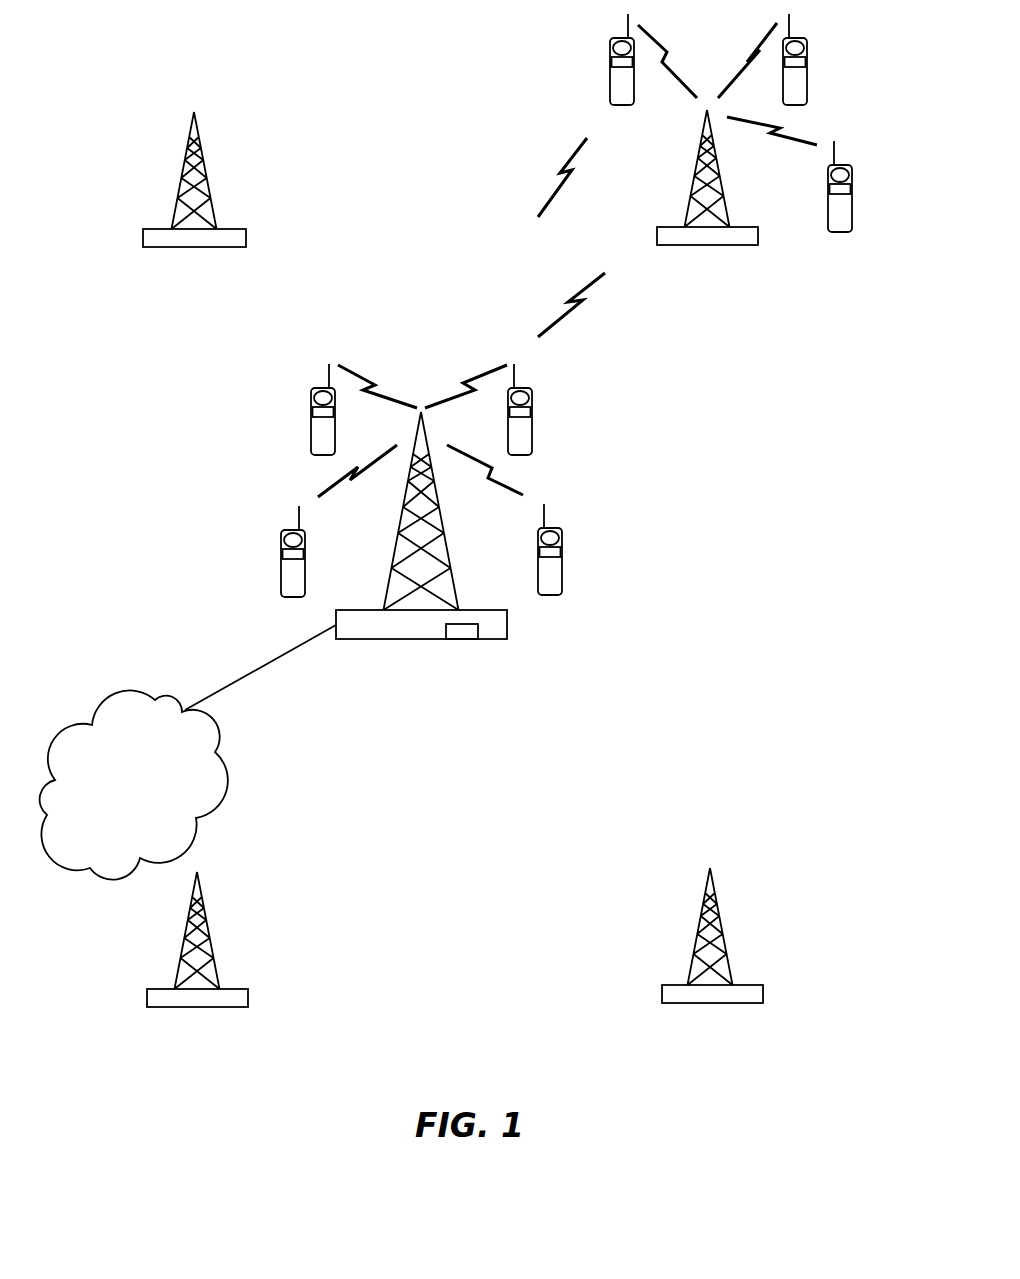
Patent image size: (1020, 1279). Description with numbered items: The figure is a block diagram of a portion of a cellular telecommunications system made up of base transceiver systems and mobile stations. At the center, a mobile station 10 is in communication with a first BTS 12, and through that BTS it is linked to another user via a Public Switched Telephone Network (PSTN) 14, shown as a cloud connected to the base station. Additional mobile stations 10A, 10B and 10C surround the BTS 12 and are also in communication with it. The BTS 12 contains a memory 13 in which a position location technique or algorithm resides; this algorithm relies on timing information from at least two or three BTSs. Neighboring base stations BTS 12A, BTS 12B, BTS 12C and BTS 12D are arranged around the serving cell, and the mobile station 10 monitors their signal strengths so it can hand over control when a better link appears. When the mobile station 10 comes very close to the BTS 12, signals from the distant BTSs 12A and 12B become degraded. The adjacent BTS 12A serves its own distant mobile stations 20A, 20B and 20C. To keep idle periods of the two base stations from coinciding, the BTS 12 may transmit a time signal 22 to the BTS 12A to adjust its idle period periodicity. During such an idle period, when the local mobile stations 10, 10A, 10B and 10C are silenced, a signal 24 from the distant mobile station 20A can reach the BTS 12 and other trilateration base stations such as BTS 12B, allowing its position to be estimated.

The mobile station 10 is at (532, 435).
The mobile station 10A is at (561, 573).
The mobile station 10B is at (311, 435).
The mobile station 10C is at (281, 580).
The first BTS 12 is at (394, 640).
The BTS 12A is at (733, 245).
The BTS 12B is at (215, 247).
The BTS 12C is at (218, 1010).
The BTS 12D is at (735, 1005).
The memory 13 is at (462, 639).
The Public Switched Telephone Network (PSTN) 14 is at (115, 872).
The mobile station 20A is at (610, 78).
The mobile station 20B is at (807, 74).
The mobile station 20C is at (843, 232).
The time signal 22 is at (573, 312).
The signal 24 is at (556, 190).